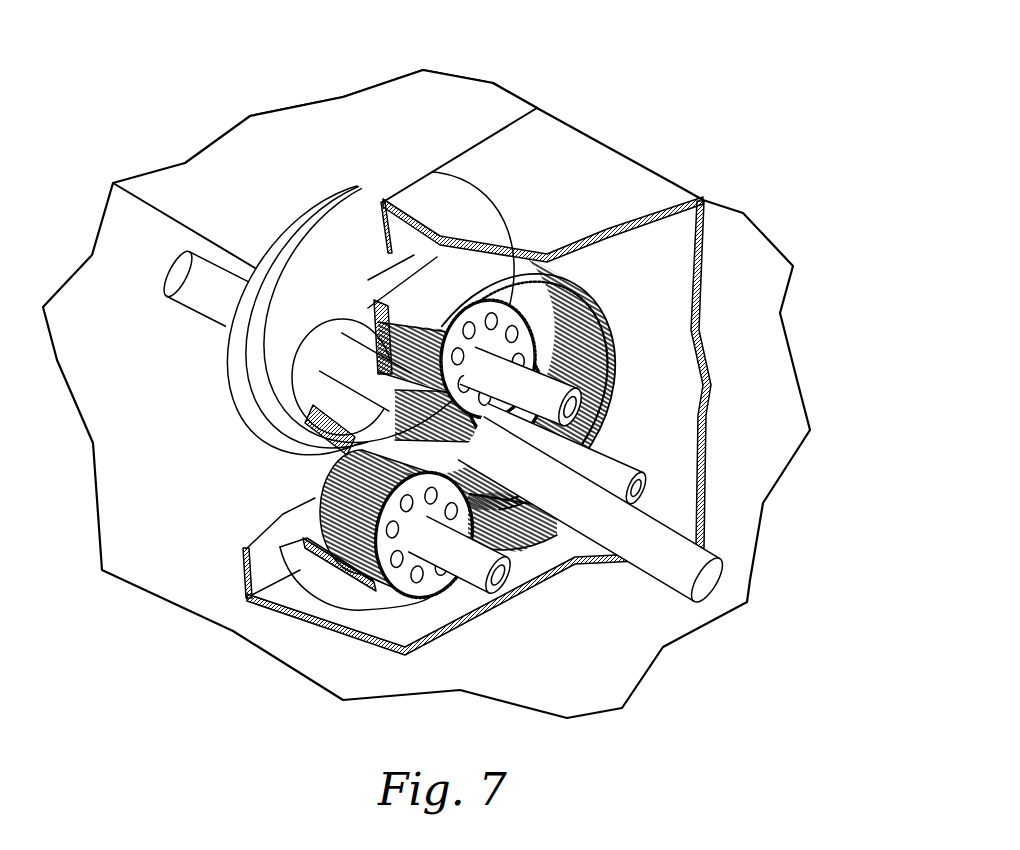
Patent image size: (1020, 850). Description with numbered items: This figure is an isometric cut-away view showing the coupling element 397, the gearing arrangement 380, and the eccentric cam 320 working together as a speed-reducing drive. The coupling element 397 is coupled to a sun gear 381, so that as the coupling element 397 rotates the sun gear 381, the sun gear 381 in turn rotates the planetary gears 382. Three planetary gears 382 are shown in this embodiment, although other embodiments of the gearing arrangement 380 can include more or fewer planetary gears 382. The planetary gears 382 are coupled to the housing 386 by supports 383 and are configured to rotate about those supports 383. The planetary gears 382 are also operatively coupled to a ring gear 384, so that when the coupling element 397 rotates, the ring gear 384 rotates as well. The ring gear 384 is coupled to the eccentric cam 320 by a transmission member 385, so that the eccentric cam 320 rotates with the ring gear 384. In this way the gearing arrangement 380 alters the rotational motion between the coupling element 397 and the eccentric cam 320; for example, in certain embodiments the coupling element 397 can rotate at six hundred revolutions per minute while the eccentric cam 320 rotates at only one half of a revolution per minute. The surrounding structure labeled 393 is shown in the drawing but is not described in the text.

The eccentric cam 320 is at (317, 220).
The gearing arrangement 380 is at (283, 487).
The sun gear 381 is at (600, 332).
The planetary gears 382 is at (553, 290).
The supports 383 is at (600, 390).
The ring gear 384 is at (355, 578).
The transmission member 385 is at (330, 333).
The housing 386 is at (527, 147).
The gearbox housing 393 is at (733, 240).
The coupling element 397 is at (667, 570).